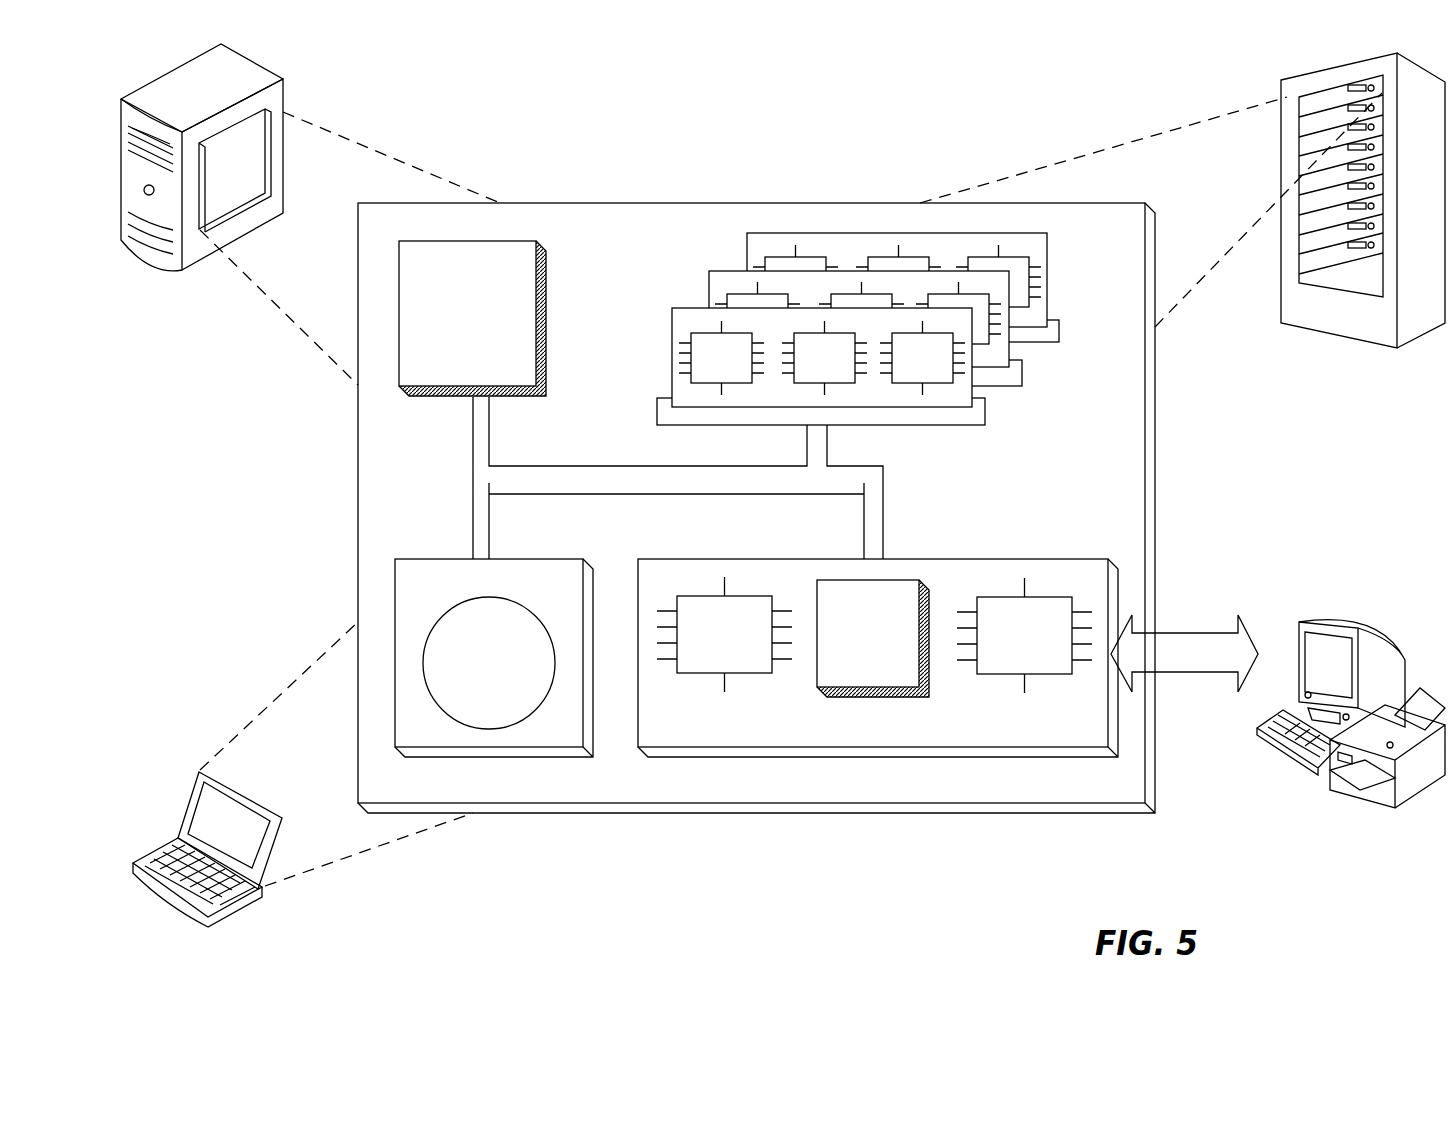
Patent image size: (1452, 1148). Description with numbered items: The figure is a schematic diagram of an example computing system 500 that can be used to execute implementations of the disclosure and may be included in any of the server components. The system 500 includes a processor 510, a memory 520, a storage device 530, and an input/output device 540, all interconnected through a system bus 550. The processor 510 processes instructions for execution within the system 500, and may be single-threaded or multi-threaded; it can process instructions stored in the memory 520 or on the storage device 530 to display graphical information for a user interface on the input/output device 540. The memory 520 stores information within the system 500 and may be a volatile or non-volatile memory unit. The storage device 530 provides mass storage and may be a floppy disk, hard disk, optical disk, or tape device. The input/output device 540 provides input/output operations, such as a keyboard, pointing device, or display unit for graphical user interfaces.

The computing system 500 is at (568, 116).
The processor 510 is at (525, 376).
The memory 520 is at (1054, 380).
The storage device 530 is at (573, 736).
The input/output device 540 is at (1293, 627).
The system bus 550 is at (672, 485).